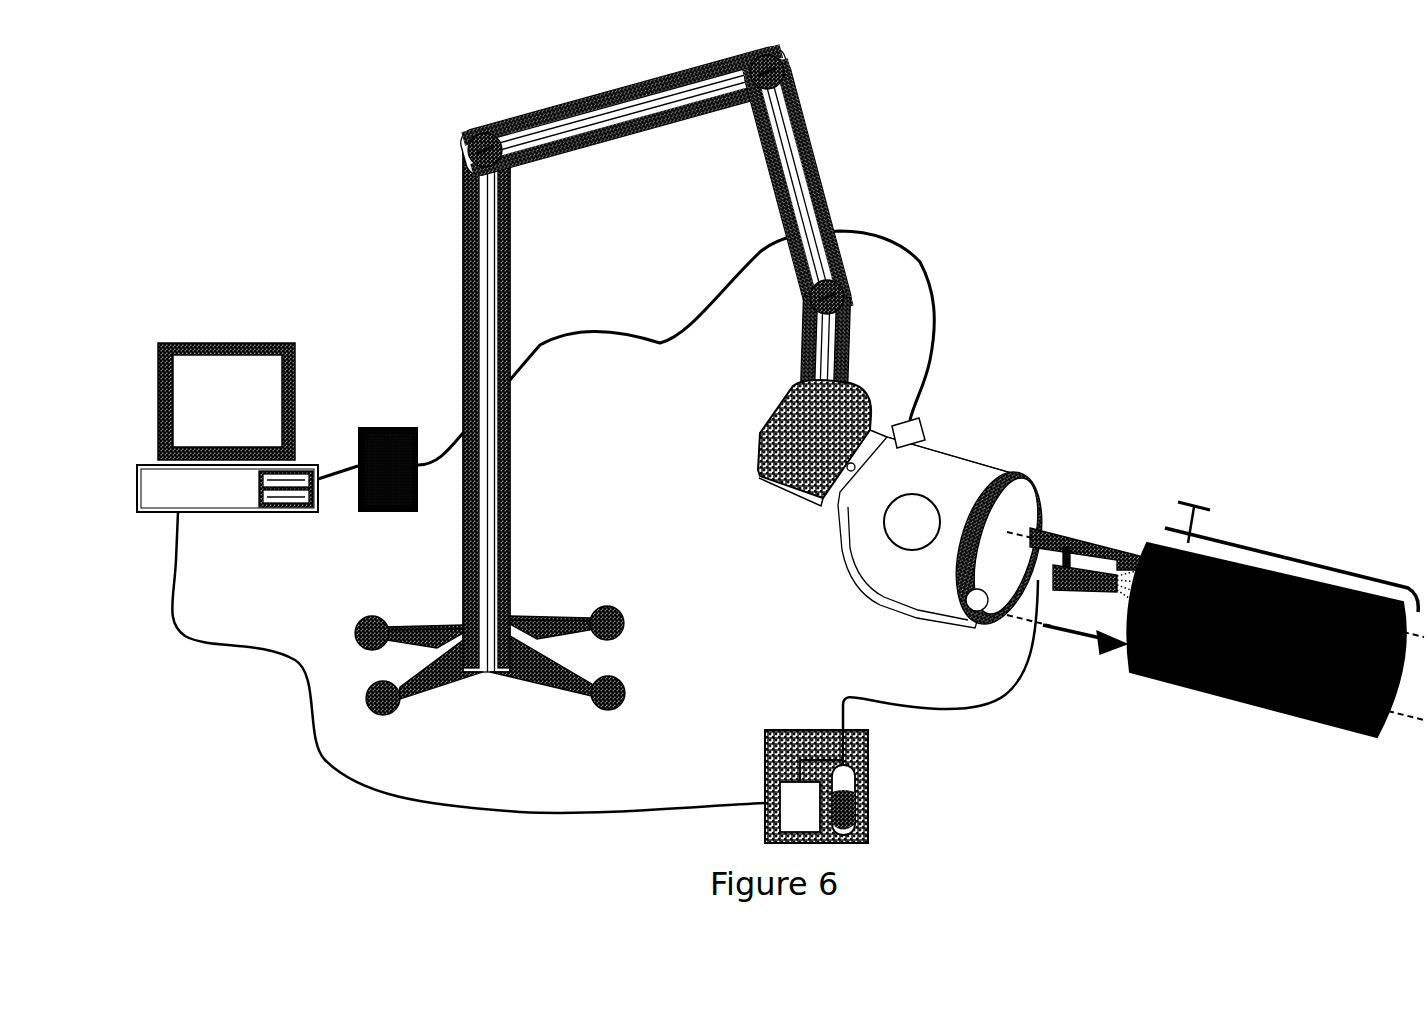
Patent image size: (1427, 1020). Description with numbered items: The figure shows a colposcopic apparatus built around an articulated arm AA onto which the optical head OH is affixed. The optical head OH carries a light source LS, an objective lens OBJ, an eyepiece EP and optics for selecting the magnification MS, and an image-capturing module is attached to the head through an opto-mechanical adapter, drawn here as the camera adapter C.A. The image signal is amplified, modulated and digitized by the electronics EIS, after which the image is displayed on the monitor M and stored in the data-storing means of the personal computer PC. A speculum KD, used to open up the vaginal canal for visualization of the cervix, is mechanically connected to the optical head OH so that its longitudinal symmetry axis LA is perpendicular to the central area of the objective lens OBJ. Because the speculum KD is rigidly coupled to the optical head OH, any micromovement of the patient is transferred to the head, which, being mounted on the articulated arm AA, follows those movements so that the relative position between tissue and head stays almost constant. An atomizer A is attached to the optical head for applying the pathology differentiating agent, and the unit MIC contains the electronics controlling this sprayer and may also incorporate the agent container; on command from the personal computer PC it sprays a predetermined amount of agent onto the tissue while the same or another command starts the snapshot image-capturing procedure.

The articulated arm AA is at (604, 130).
The monitor M is at (160, 343).
The personal computer PC is at (153, 476).
The electronics EIS is at (373, 427).
The eyepiece EP is at (792, 385).
The camera adapter C.A. is at (925, 432).
The objective lens OBJ is at (1013, 536).
The optical head OH is at (848, 522).
The optics for selecting the magnification MS is at (916, 541).
The light source LS is at (988, 613).
The speculum KD is at (1303, 560).
The atomizer A is at (1068, 578).
The longitudinal symmetry axis LA is at (1403, 716).
The unit MIC is at (868, 815).